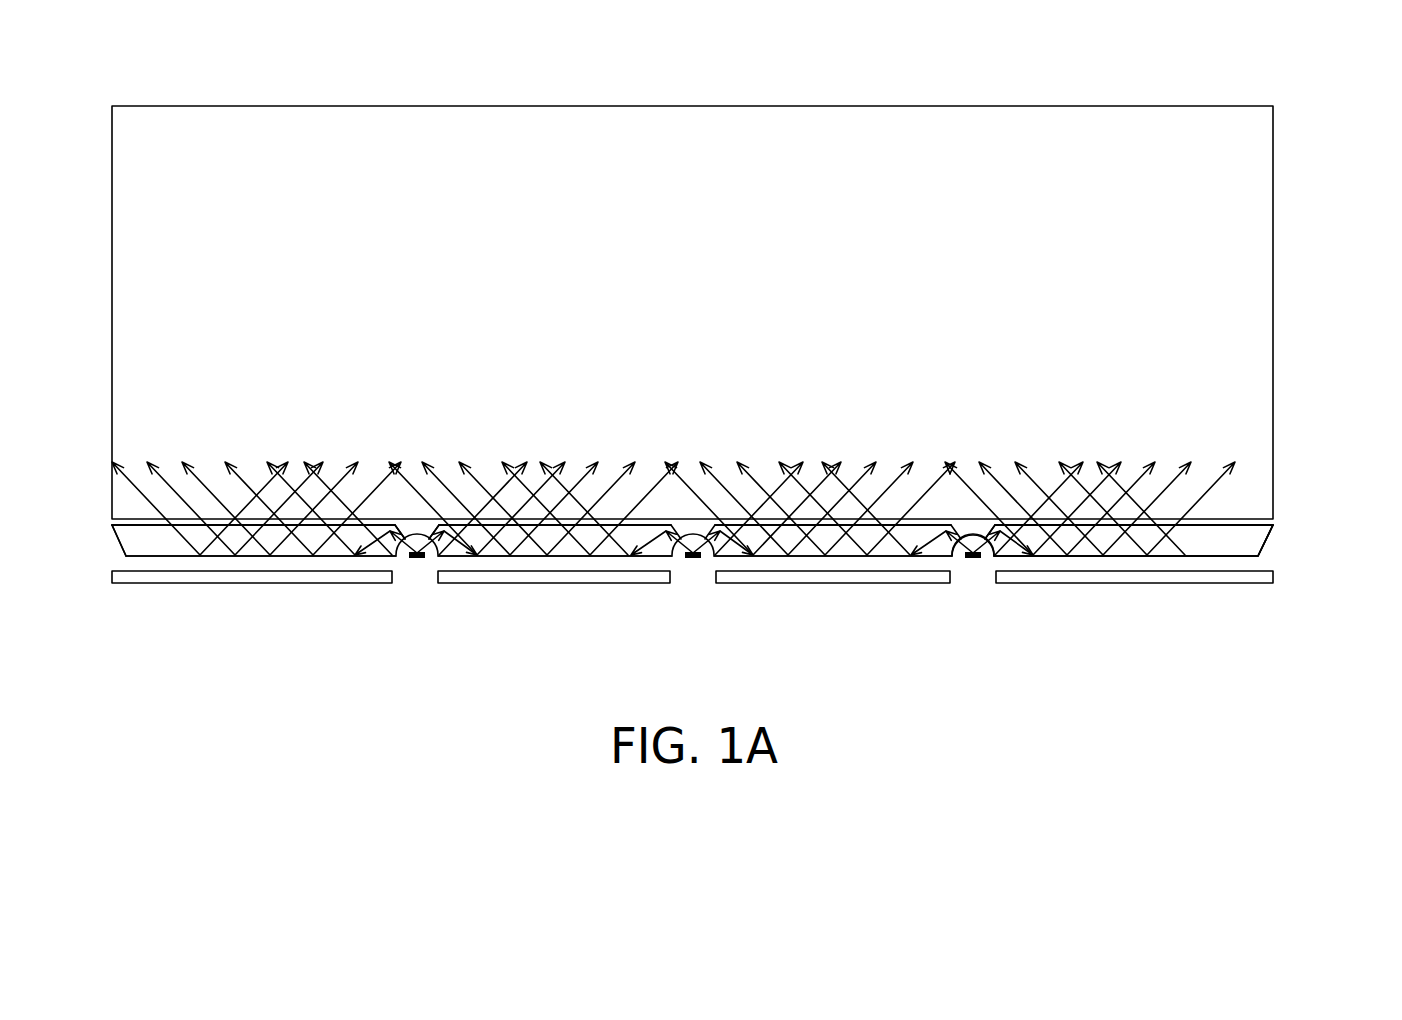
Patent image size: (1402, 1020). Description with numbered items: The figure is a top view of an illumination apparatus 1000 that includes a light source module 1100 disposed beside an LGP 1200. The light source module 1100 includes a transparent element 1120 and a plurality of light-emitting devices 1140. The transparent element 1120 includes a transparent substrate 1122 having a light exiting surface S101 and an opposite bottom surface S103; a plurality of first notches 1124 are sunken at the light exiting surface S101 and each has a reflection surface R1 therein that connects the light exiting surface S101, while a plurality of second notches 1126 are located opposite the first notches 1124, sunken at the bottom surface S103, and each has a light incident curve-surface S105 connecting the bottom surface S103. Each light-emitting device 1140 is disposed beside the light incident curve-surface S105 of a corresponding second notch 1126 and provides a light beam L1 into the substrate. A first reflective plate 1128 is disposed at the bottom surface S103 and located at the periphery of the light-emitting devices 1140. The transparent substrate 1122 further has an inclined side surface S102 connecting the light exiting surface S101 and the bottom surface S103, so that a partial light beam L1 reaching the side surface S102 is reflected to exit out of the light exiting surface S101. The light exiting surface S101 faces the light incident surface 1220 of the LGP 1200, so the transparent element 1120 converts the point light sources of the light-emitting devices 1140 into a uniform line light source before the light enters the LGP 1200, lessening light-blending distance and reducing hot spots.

The illumination apparatus 1000 is at (1318, 616).
The light source module 1100 is at (103, 527).
The transparent element 1120 is at (1053, 642).
The transparent substrate 1122 is at (1007, 548).
The first notches 1124 is at (940, 535).
The second notches 1126 is at (965, 566).
The first reflective plate 1128 is at (1263, 582).
The light-emitting devices 1140 is at (693, 560).
The LGP 1200 is at (1257, 342).
The light incident surface 1220 is at (1264, 530).
The light exiting surface S101 is at (587, 513).
The side surface S102 is at (117, 553).
The bottom surface S103 is at (605, 569).
The light incident curve-surface S105 is at (431, 563).
The reflection surface R1 is at (413, 517).
The light beam L1 is at (401, 547).